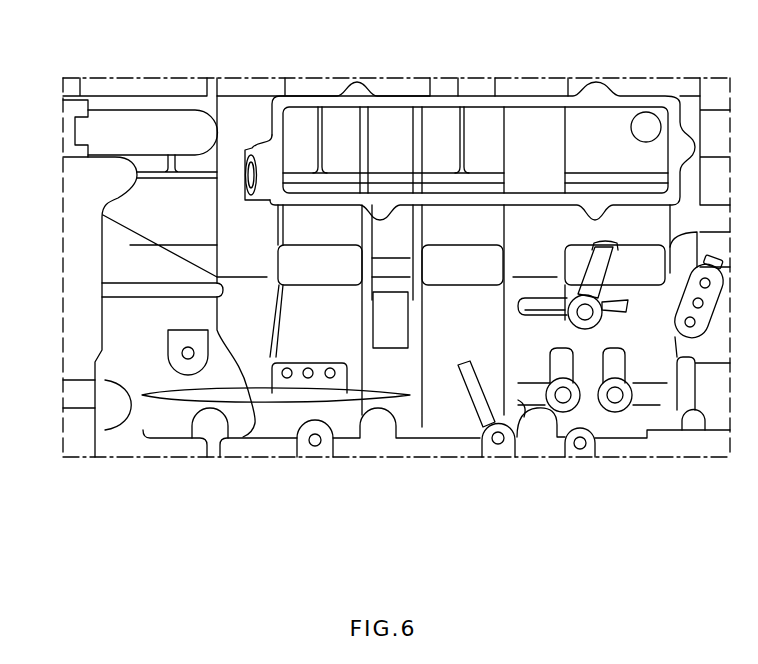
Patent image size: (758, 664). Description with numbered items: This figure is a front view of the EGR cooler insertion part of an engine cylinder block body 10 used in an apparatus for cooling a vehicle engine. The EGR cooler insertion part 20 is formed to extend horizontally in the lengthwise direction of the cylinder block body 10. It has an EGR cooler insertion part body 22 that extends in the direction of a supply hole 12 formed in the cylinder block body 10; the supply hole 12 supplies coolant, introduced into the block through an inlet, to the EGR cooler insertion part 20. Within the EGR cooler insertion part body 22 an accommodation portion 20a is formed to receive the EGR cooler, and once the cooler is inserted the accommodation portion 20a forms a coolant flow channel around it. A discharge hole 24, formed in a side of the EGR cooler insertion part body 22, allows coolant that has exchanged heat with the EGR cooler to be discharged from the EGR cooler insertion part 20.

The cylinder block body 10 is at (183, 85).
The supply hole 12 is at (645, 127).
The EGR cooler insertion part 20 is at (412, 76).
The accommodation portion 20a is at (528, 128).
The EGR cooler insertion part body 22 is at (312, 105).
The discharge hole 24 is at (262, 192).